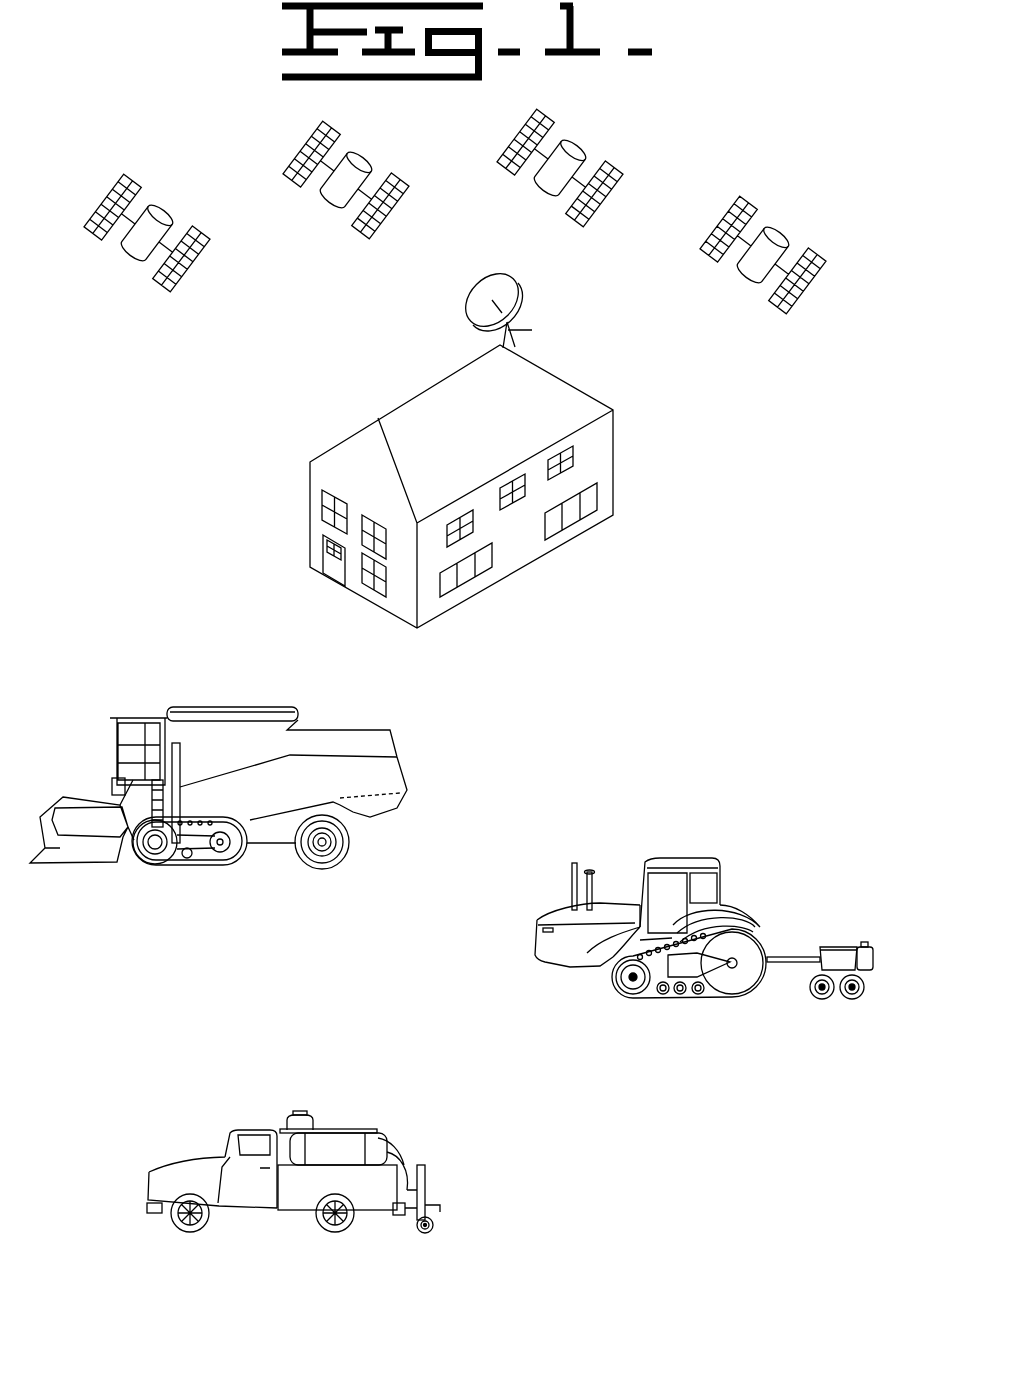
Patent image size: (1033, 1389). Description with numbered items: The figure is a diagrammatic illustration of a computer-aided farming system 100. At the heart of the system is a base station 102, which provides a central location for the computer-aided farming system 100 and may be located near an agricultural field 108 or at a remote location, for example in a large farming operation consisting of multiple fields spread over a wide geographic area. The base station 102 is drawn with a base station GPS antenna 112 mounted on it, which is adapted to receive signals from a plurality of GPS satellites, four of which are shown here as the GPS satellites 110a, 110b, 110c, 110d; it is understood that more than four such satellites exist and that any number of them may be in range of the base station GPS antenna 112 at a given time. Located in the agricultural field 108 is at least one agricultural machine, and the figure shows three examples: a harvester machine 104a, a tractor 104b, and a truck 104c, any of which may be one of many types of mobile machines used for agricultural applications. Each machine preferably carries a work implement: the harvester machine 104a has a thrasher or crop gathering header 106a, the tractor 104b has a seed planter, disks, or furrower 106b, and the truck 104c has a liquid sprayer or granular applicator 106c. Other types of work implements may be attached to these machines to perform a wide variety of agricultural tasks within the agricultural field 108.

The computer-aided farming system 100 is at (533, 700).
The base station 102 is at (310, 534).
The harvester machine 104a is at (332, 743).
The tractor 104b is at (680, 860).
The truck 104c is at (182, 1157).
The crop gathering header 106a is at (93, 852).
The furrower 106b is at (832, 947).
The liquid sprayer 106c is at (428, 1185).
The agricultural field 108 is at (586, 1249).
The GPS satellite 110a is at (183, 282).
The GPS satellite 110b is at (387, 220).
The GPS satellite 110c is at (583, 225).
The GPS satellite 110d is at (808, 283).
The base station GPS antenna 112 is at (467, 321).